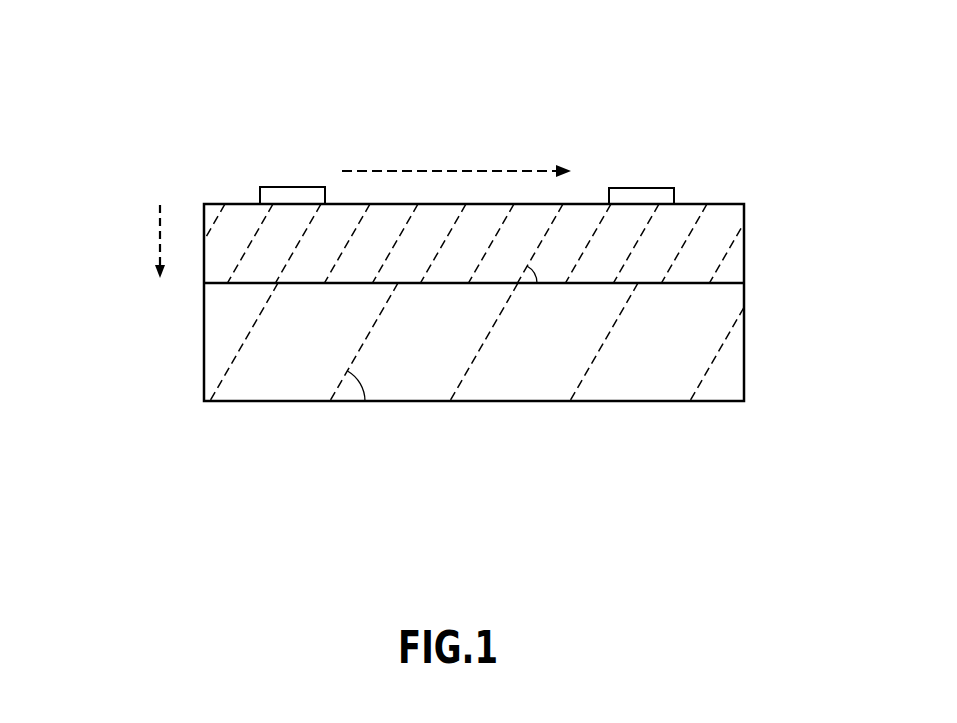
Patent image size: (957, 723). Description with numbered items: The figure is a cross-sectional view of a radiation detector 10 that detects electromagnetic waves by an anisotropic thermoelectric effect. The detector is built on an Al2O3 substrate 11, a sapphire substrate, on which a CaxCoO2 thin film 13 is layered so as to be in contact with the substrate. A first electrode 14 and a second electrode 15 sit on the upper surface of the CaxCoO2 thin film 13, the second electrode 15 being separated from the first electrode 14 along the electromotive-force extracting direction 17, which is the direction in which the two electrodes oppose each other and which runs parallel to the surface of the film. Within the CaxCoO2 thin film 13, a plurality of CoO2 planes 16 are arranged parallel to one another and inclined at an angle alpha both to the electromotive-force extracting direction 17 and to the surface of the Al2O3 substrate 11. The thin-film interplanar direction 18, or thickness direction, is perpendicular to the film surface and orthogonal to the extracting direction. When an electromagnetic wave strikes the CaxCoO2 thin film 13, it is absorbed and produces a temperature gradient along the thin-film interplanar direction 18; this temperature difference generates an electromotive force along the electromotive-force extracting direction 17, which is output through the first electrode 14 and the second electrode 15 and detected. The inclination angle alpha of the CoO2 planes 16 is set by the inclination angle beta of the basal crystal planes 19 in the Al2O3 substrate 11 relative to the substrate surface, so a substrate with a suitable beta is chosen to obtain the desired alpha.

The radiation detector 10 is at (744, 110).
The Al2O3 substrate 11 is at (700, 352).
The CaxCoO2 thin film 13 is at (713, 225).
The first electrode 14 is at (293, 195).
The second electrode 15 is at (642, 195).
The CoO2 planes 16 is at (253, 243).
The electromotive-force extracting direction 17 is at (422, 170).
The thin-film interplanar direction 18 is at (160, 237).
The (0001) planes 19 is at (473, 362).